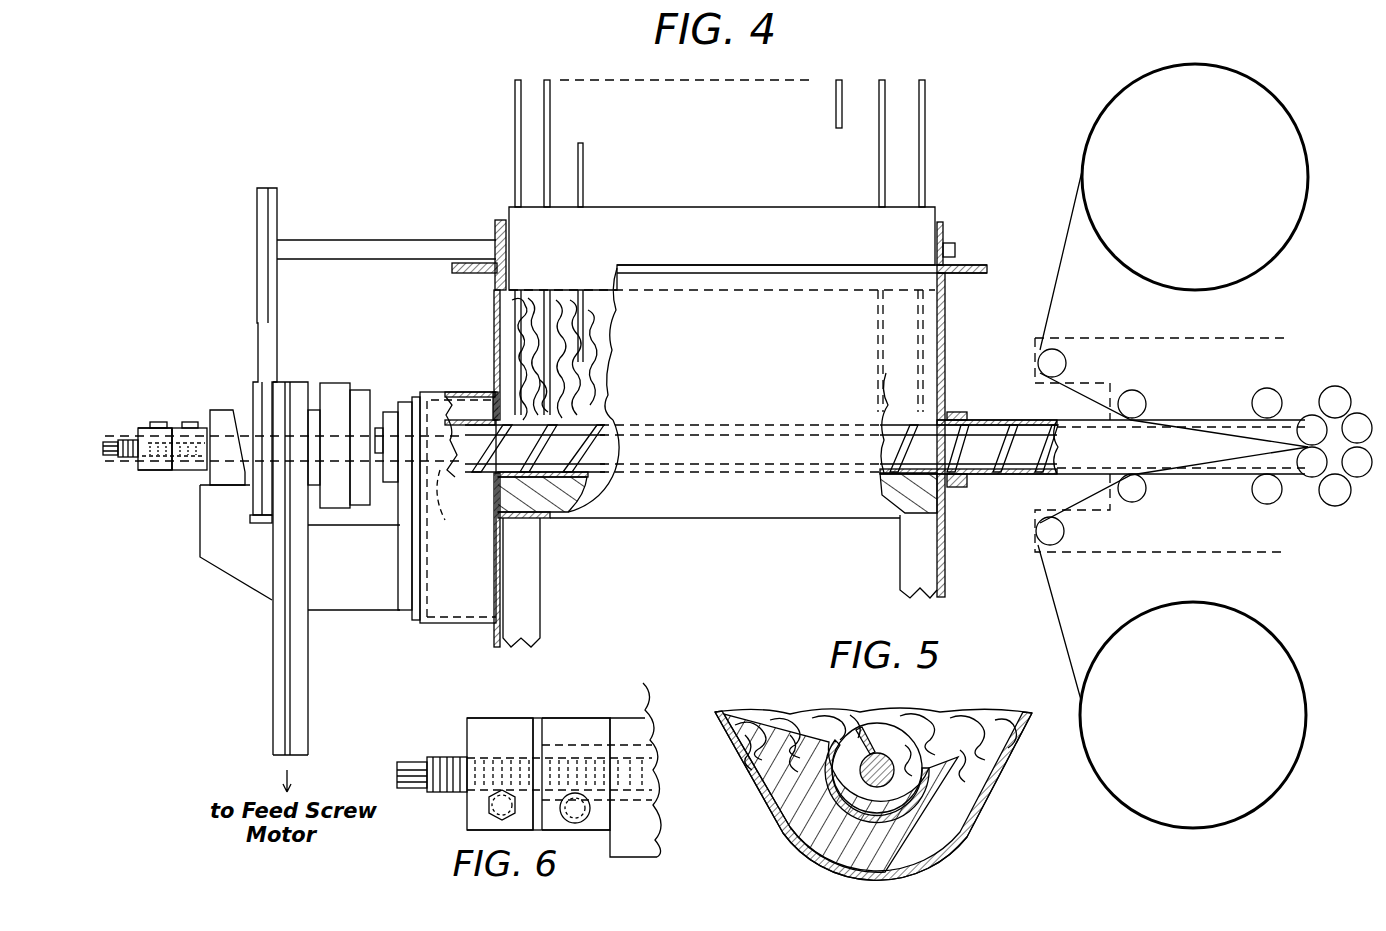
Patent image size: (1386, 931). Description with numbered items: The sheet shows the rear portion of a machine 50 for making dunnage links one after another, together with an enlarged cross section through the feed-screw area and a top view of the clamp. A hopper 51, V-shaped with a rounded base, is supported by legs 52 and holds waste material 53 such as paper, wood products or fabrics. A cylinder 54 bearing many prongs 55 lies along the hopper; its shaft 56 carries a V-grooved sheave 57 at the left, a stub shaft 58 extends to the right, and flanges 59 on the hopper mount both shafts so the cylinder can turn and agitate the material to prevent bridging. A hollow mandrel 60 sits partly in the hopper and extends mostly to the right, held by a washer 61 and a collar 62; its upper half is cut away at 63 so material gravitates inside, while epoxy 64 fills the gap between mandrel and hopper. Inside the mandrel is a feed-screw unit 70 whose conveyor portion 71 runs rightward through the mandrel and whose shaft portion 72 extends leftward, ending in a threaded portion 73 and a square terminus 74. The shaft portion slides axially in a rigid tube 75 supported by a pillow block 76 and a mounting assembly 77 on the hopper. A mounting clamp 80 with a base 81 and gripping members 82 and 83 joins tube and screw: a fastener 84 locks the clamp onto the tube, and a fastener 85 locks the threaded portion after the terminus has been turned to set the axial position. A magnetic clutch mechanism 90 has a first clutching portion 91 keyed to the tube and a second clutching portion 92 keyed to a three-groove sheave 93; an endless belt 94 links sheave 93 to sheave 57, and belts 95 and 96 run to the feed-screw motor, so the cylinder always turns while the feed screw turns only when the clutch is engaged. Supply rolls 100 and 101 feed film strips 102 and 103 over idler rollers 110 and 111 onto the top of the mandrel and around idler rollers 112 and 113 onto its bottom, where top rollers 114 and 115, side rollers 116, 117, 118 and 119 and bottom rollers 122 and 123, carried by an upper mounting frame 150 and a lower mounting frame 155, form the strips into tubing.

In FIG. 4, the machine 50 is at (1032, 88).
In FIG. 4, the hopper 51 is at (935, 345).
In FIG. 5, the hopper 51 is at (980, 790).
In FIG. 4, the legs 52 is at (523, 597).
In FIG. 4, the waste material 53 is at (592, 352).
In FIG. 5, the waste material 53 is at (788, 710).
In FIG. 4, the cylinder 54 is at (786, 207).
In FIG. 4, the prongs 55 is at (552, 117).
In FIG. 4, the shaft 56 is at (312, 240).
In FIG. 4, the sheave 57 is at (257, 195).
In FIG. 4, the stub shaft 58 is at (955, 246).
In FIG. 4, the flanges 59 is at (943, 224).
In FIG. 4, the mandrel 60 is at (975, 420).
In FIG. 5, the mandrel 60 is at (950, 835).
In FIG. 4, the washer 61 is at (960, 487).
In FIG. 4, the collar 62 is at (956, 412).
In FIG. 5, the cut-away 63 is at (933, 755).
In FIG. 5, the epoxy 64 is at (810, 822).
In FIG. 4, the feed-screw unit 70 is at (1009, 456).
In FIG. 5, the feed-screw unit 70 is at (860, 775).
In FIG. 4, the conveyor portion 71 is at (470, 472).
In FIG. 4, the shaft portion 72 is at (458, 507).
In FIG. 4, the threaded portion 73 is at (128, 458).
In FIG. 6, the threaded portion 73 is at (435, 757).
In FIG. 4, the square terminus 74 is at (106, 443).
In FIG. 6, the square terminus 74 is at (400, 762).
In FIG. 4, the tube 75 is at (247, 440).
In FIG. 6, the tube 75 is at (630, 730).
In FIG. 4, the pillow block 76 is at (225, 470).
In FIG. 4, the mounting assembly 77 is at (402, 478).
In FIG. 4, the mounting clamp 80 is at (175, 481).
In FIG. 6, the mounting clamp 80 is at (440, 710).
In FIG. 4, the base 81 is at (146, 474).
In FIG. 6, the base 81 is at (538, 718).
In FIG. 4, the gripping member 82 is at (150, 428).
In FIG. 6, the gripping member 82 is at (485, 718).
In FIG. 4, the gripping member 83 is at (180, 428).
In FIG. 6, the gripping member 83 is at (580, 718).
In FIG. 6, the fastener 84 is at (592, 812).
In FIG. 6, the fastener 85 is at (489, 808).
In FIG. 4, the magnetic clutch mechanism 90 is at (350, 366).
In FIG. 4, the first clutching portion 91 is at (360, 390).
In FIG. 4, the second clutching portion 92 is at (333, 383).
In FIG. 4, the sheave 93 is at (315, 488).
In FIG. 4, the endless belt 94 is at (257, 259).
In FIG. 4, the endless belt 95 is at (273, 680).
In FIG. 4, the endless belt 96 is at (300, 662).
In FIG. 4, the supply roll 100 is at (1262, 85).
In FIG. 4, the supply roll 101 is at (1272, 633).
In FIG. 4, the strip 102 is at (1060, 245).
In FIG. 4, the strip 103 is at (1058, 636).
In FIG. 4, the first idler roller 110 is at (1062, 352).
In FIG. 4, the second idler roller 111 is at (1143, 395).
In FIG. 4, the idler roller 112 is at (1064, 533).
In FIG. 4, the idler roller 113 is at (1144, 494).
In FIG. 4, the top roller 114 is at (1267, 388).
In FIG. 4, the top roller 115 is at (1333, 386).
In FIG. 4, the side roller 116 is at (1308, 415).
In FIG. 4, the side roller 117 is at (1305, 476).
In FIG. 4, the side roller 118 is at (1360, 413).
In FIG. 4, the side roller 119 is at (1362, 477).
In FIG. 4, the bottom roller 122 is at (1264, 498).
In FIG. 4, the bottom roller 123 is at (1326, 504).
In FIG. 4, the upper mounting frame 150 is at (1222, 345).
In FIG. 4, the lower mounting frame 155 is at (1165, 540).